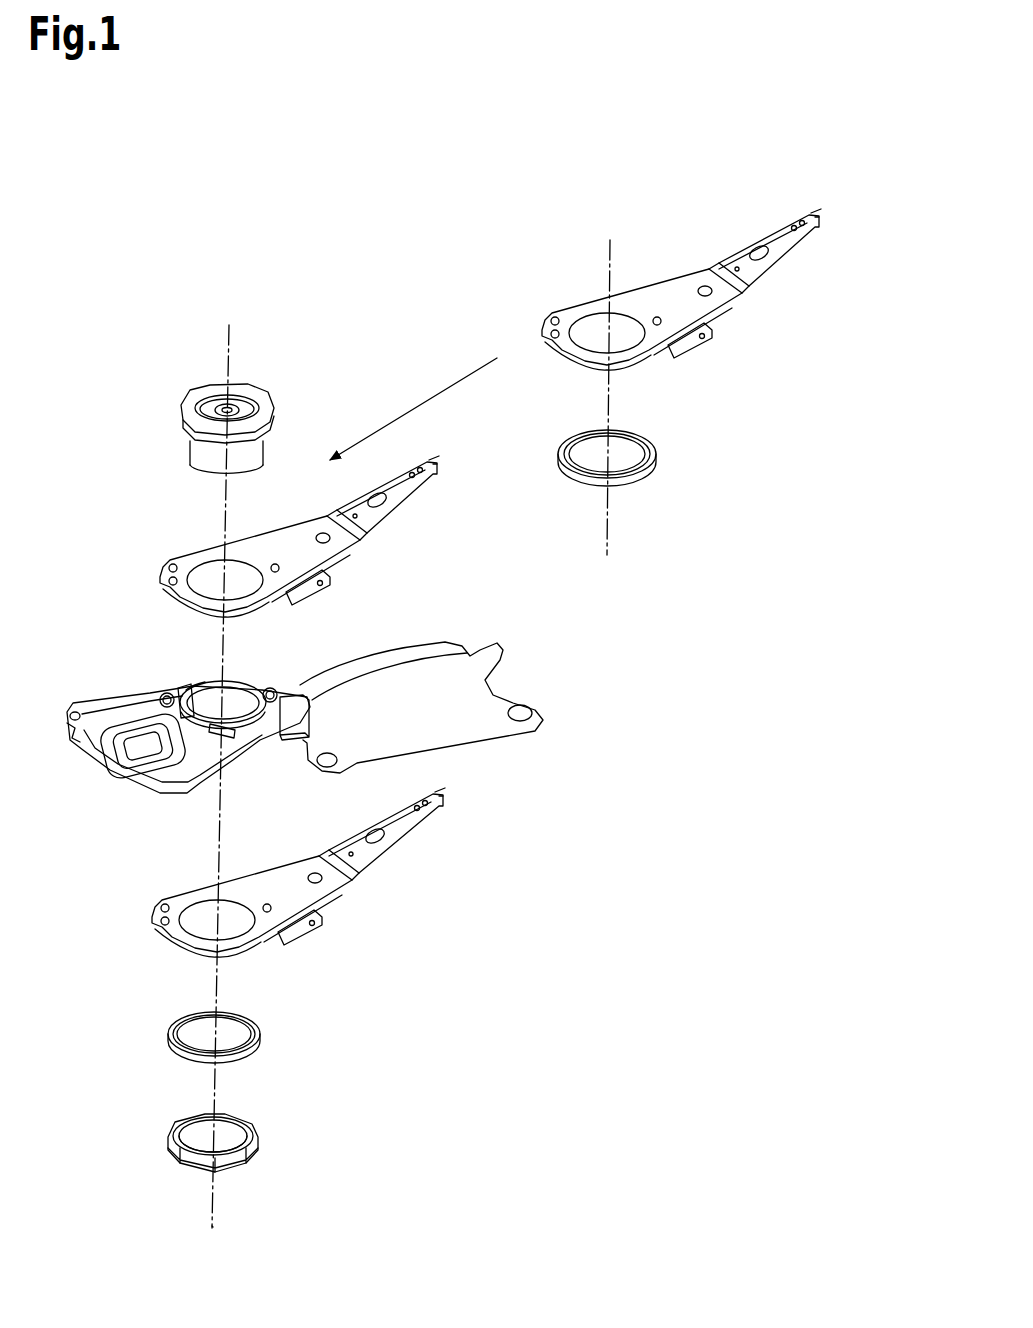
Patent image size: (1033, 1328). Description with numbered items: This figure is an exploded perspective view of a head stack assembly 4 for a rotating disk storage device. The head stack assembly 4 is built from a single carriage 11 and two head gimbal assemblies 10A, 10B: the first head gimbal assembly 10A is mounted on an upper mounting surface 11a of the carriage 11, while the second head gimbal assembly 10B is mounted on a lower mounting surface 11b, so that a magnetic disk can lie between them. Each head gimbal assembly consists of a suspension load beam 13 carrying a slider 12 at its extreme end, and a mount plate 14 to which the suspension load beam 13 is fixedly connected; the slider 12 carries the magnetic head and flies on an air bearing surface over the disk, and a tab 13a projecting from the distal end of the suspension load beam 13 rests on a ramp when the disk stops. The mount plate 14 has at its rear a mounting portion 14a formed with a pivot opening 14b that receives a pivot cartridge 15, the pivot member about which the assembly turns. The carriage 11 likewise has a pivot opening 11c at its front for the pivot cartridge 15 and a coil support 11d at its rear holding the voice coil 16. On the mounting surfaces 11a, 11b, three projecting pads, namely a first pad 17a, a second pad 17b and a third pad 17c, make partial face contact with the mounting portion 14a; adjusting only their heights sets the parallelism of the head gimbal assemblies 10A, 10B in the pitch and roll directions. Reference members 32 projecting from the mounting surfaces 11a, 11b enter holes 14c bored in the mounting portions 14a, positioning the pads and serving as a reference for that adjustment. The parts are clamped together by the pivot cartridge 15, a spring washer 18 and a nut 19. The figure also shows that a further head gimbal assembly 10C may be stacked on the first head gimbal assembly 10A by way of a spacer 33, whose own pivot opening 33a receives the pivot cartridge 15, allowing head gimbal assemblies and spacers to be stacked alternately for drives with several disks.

The head stack assembly 4 is at (196, 266).
The first head gimbal assembly 10A is at (296, 534).
The second head gimbal assembly 10B is at (282, 887).
The head gimbal assembly 10C is at (691, 308).
The carriage 11 is at (289, 722).
The upper mounting surface 11a is at (186, 686).
The lower mounting surface 11b is at (283, 752).
The pivot opening 11c is at (290, 694).
The coil support 11d is at (186, 792).
The slider 12 is at (449, 493).
The suspension load beam 13 is at (425, 480).
The tab 13a is at (471, 469).
The mount plate 14 is at (257, 544).
The mounting portion 14a is at (243, 608).
The pivot opening 14b is at (211, 547).
The holes 14c is at (238, 568).
The pivot cartridge 15 is at (258, 396).
The voice coil 16 is at (108, 720).
The first pad 17a is at (226, 683).
The second pad 17b is at (186, 688).
The third pad 17c is at (230, 742).
The spring washer 18 is at (258, 1033).
The nut 19 is at (256, 1143).
The reference members 32 is at (163, 698).
The spacer 33 is at (643, 433).
The pivot opening 33a is at (592, 432).